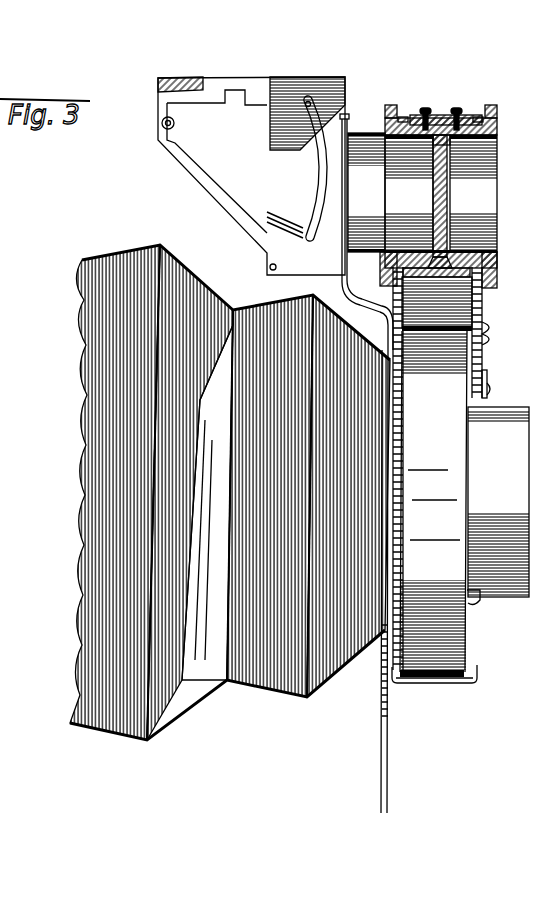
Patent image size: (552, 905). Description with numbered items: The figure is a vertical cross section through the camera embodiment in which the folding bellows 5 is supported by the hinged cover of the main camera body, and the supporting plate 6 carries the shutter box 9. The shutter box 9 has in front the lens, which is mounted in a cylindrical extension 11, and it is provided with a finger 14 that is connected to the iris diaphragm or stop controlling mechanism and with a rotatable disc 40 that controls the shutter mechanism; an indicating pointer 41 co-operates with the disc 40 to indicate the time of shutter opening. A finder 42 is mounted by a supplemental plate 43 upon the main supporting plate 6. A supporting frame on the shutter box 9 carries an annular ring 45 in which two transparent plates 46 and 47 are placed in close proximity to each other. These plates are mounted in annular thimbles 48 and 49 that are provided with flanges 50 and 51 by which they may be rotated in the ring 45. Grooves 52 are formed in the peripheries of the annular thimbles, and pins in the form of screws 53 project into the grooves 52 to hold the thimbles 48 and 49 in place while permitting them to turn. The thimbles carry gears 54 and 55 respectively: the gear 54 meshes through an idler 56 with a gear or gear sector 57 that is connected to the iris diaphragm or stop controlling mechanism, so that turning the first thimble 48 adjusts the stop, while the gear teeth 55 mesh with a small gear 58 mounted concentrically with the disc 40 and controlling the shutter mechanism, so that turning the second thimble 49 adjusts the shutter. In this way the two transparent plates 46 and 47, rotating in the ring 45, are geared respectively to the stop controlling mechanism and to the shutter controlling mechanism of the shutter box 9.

The folding bellows 5 is at (122, 270).
The supporting plate 6 is at (380, 731).
The shutter box 9 is at (440, 478).
The cylindrical extension 11 is at (507, 545).
The finger 14 is at (442, 680).
The rotatable disc 40 is at (482, 307).
The indicating pointer 41 is at (489, 383).
The finder 42 is at (312, 100).
The supplemental plate 43 is at (342, 284).
The annular ring 45 is at (468, 113).
The transparent plate 46 is at (436, 206).
The transparent plate 47 is at (444, 206).
The annular thimble 48 is at (366, 177).
The annular thimble 49 is at (497, 138).
The flange 50 is at (388, 107).
The flange 51 is at (493, 113).
The grooves 52 is at (452, 255).
The screws 53 is at (455, 108).
The gear 54 is at (403, 117).
The gear 55 is at (480, 118).
The idler 56 is at (400, 278).
The gear sector 57 is at (398, 414).
The small gear 58 is at (476, 356).